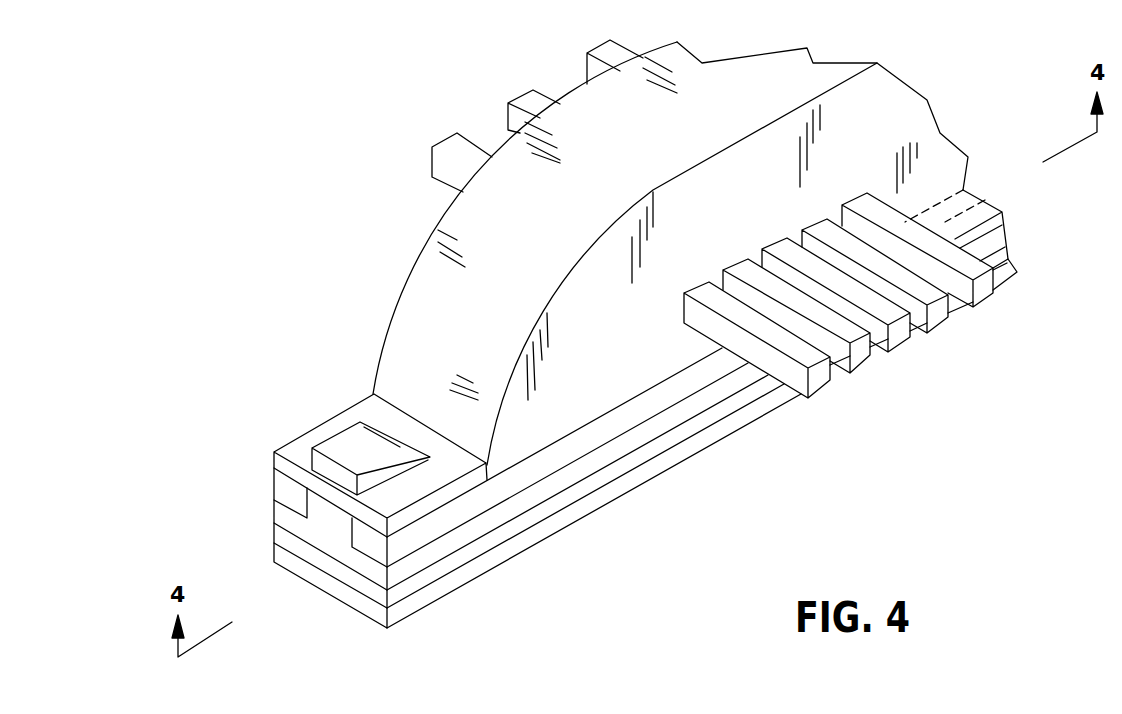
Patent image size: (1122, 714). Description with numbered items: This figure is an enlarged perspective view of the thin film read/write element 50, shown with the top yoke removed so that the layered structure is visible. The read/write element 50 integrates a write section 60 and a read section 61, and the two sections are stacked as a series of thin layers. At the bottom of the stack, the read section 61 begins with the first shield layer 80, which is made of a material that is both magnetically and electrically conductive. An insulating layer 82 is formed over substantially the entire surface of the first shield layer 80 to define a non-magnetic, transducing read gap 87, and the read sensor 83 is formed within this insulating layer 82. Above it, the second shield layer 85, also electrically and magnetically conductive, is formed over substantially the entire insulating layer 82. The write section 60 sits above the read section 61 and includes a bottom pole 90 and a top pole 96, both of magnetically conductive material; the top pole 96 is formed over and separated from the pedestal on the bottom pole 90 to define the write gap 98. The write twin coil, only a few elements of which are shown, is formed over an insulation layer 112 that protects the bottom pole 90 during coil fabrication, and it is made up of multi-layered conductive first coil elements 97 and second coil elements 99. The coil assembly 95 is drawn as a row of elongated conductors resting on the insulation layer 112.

The read/write element 50 is at (449, 34).
The rear block 95 is at (778, 221).
The first coil elements 97 is at (980, 310).
The second coil elements 99 is at (942, 312).
The first shield layer 80 is at (702, 450).
The insulation layer 112 is at (612, 430).
The second shield layer 85 is at (470, 535).
The insulating layer 82 is at (447, 565).
The read gap 87 is at (583, 512).
The write section 60 is at (322, 518).
The read section 61 is at (275, 538).
The write gap 98 is at (282, 462).
The bottom pole 90 is at (322, 527).
The read sensor 83 is at (332, 565).
The top pole 96 is at (338, 426).